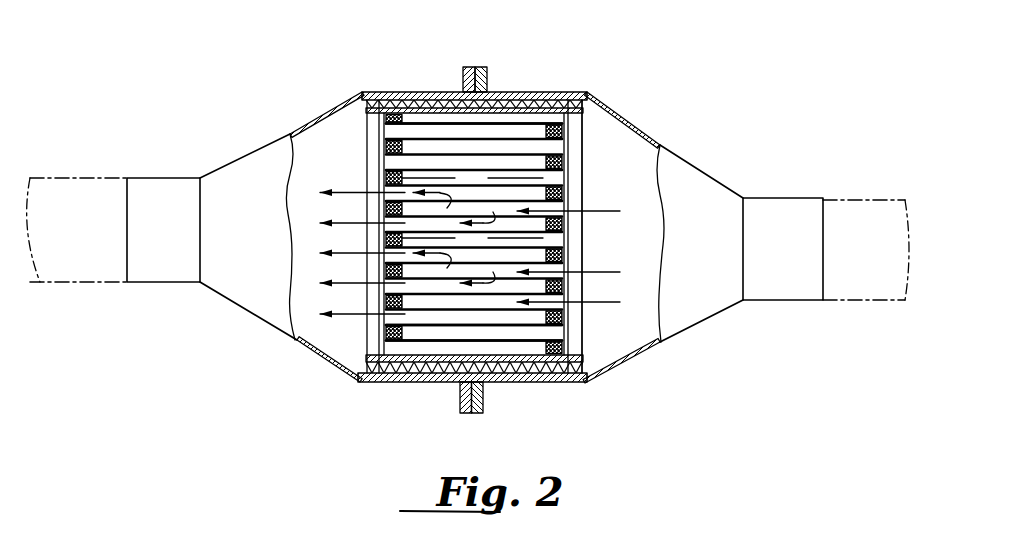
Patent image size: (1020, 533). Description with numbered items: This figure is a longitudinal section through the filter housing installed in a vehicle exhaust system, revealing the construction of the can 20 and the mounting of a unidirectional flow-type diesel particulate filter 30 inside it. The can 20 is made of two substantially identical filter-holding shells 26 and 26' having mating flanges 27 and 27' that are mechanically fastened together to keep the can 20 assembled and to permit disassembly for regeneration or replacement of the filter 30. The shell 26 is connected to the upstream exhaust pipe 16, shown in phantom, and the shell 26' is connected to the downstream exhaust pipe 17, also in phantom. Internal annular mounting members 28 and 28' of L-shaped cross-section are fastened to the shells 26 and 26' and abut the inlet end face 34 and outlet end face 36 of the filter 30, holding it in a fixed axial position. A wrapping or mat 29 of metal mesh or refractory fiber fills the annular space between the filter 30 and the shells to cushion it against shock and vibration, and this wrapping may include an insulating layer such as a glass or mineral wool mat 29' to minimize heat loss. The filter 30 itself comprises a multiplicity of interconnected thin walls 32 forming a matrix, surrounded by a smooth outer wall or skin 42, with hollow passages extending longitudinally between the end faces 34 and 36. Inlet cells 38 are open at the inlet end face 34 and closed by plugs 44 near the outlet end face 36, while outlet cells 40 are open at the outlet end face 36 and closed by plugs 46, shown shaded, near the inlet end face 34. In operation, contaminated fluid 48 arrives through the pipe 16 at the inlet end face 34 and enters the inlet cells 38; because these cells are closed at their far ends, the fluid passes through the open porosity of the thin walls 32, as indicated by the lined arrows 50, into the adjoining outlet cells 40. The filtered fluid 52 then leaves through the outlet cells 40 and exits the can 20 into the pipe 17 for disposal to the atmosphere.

The upstream exhaust pipe 16 is at (842, 200).
The downstream exhaust pipe 17 is at (73, 178).
The can 20 is at (559, 83).
The filter-holding shell 26 is at (664, 202).
The filter-holding shell 26' is at (282, 198).
The mating flange 27 is at (507, 46).
The mating flange 27' is at (454, 53).
The internal annular mounting member 28 is at (640, 236).
The internal annular mounting member 28' is at (314, 236).
The wrapping or mat 29 is at (443, 418).
The insulating mat 29' is at (481, 402).
The diesel particulate filter 30 is at (430, 122).
The thin walls 32 is at (503, 345).
The inlet end face 34 is at (570, 183).
The outlet end face 36 is at (372, 355).
The inlet cells 38 is at (520, 153).
The outlet cells 40 is at (433, 350).
The outer wall or skin 42 is at (388, 379).
The plugs 44 is at (386, 180).
The plugs 46 is at (560, 353).
The contaminated fluid 48 is at (620, 211).
The lined arrows 50 is at (495, 273).
The filtered fluid 52 is at (310, 312).